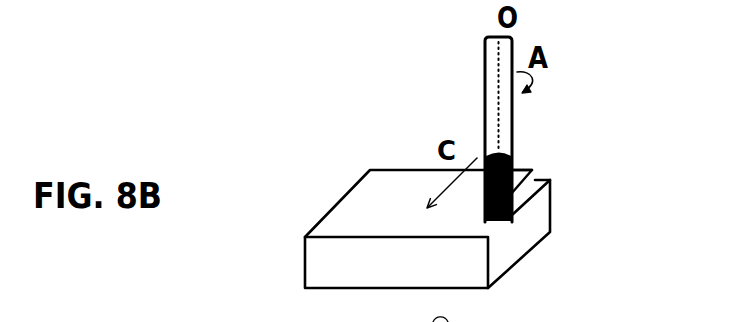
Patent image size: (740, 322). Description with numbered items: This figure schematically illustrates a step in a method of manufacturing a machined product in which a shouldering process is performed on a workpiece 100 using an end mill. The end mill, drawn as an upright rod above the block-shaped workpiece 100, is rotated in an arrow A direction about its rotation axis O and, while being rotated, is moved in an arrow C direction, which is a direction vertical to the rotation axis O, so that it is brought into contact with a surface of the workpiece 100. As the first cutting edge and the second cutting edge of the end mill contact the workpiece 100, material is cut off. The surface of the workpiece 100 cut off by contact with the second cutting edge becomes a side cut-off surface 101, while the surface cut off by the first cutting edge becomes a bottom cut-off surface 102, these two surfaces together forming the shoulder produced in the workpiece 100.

The workpiece 100 is at (473, 202).
The side cut-off surface 101 is at (534, 176).
The bottom cut-off surface 102 is at (534, 193).